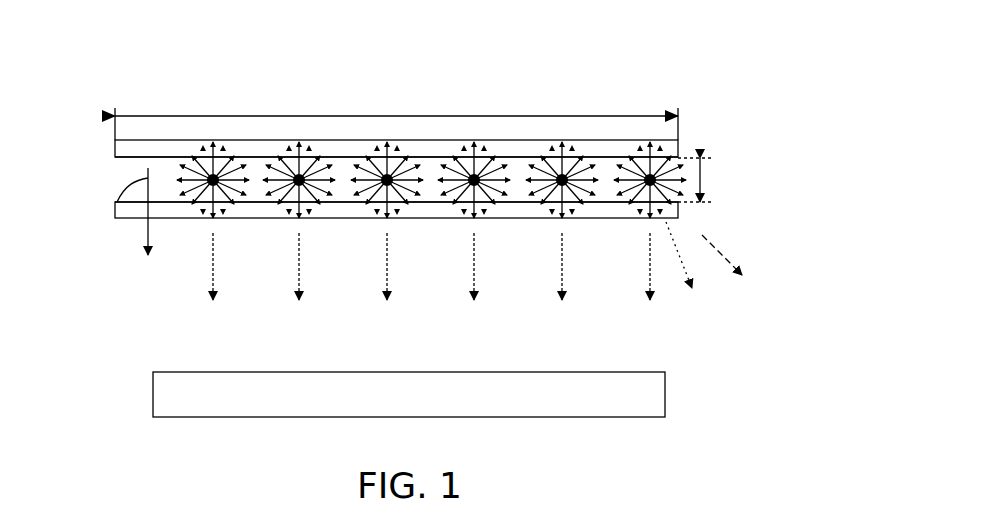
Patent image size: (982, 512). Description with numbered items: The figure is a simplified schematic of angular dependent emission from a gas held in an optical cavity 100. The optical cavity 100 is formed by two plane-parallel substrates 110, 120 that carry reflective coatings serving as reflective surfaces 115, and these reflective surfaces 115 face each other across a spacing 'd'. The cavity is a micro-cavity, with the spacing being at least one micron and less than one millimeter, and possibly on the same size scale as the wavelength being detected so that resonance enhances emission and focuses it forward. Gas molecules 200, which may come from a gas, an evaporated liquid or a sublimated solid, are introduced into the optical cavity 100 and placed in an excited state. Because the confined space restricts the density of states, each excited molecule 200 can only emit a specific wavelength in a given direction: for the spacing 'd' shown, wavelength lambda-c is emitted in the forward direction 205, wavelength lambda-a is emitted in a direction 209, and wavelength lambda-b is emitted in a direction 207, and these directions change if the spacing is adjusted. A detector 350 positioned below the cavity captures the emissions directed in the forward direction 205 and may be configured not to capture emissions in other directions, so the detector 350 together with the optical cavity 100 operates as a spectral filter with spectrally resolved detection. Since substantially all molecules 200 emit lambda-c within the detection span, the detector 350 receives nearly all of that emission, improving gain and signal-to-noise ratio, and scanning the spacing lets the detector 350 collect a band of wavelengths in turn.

The optical cavity 100 is at (732, 62).
The substrate 110 is at (167, 145).
The reflective surfaces 115 is at (342, 163).
The substrate 120 is at (132, 219).
The gas molecules 200 is at (486, 160).
The forward direction 205 is at (562, 247).
The direction 207 is at (582, 197).
The direction 209 is at (396, 198).
The detector 350 is at (178, 372).